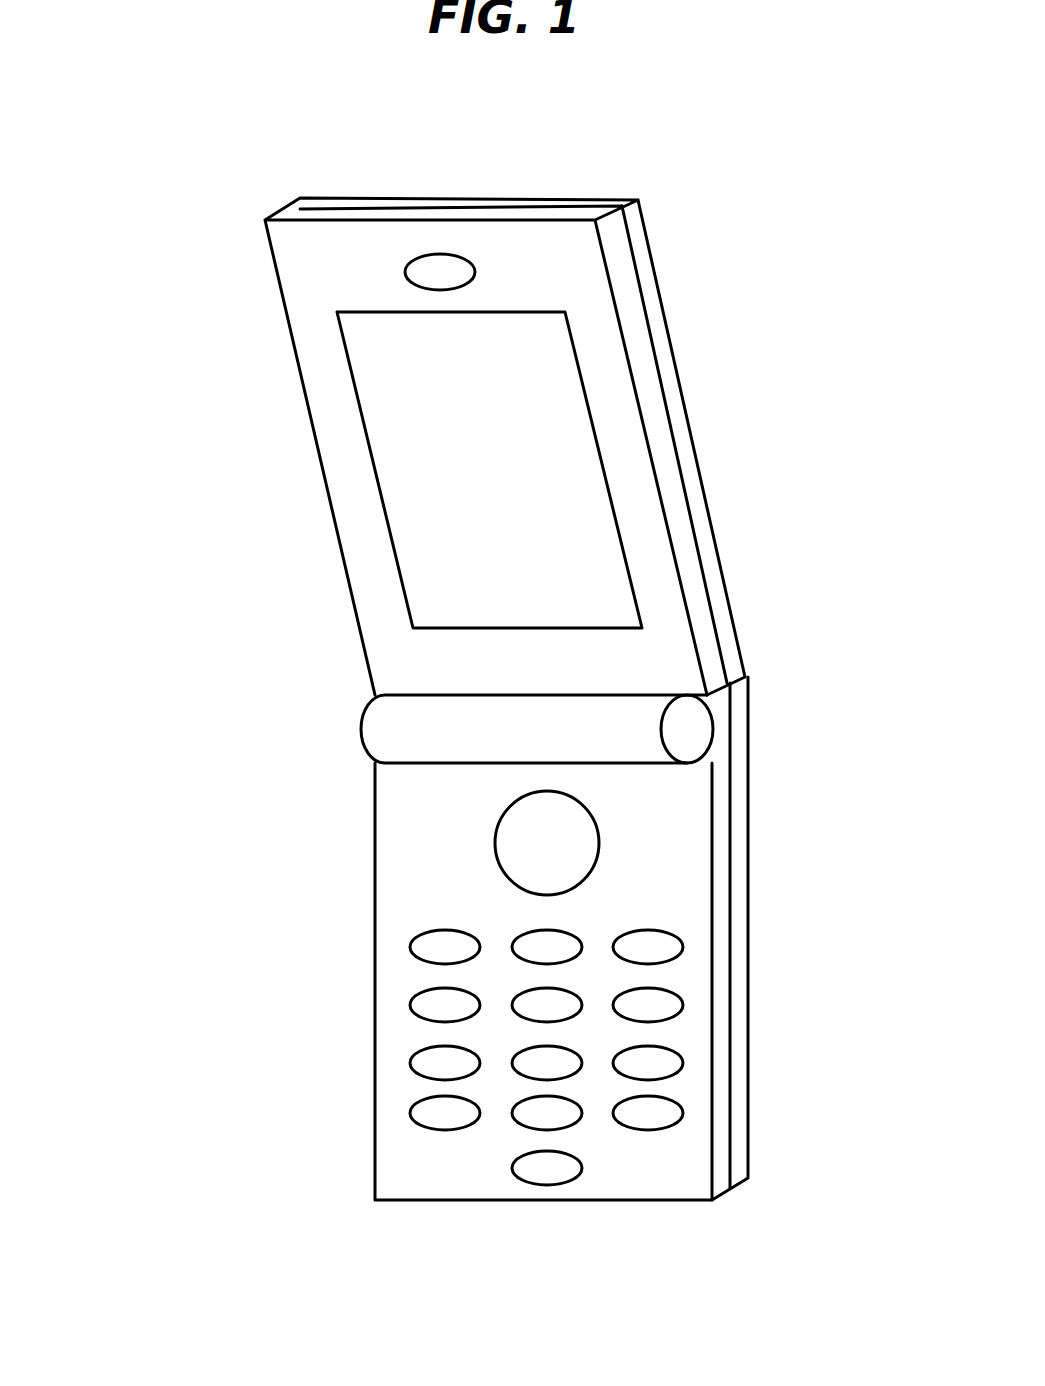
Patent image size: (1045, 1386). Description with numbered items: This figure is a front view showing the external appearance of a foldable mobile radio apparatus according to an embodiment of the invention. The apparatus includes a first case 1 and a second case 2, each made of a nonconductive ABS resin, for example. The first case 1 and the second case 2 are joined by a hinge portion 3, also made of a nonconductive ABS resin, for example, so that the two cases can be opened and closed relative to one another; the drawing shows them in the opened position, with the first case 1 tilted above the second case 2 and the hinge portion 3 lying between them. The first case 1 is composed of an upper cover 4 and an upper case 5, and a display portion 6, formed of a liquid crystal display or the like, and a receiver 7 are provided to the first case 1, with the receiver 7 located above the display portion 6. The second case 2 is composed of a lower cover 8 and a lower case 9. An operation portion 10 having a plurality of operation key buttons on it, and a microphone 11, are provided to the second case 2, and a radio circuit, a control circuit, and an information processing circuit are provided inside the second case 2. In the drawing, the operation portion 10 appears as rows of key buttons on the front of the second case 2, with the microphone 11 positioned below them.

The first case 1 is at (470, 420).
The second case 2 is at (536, 988).
The hinge portion 3 is at (683, 737).
The upper cover 4 is at (570, 283).
The upper case 5 is at (660, 340).
The display portion 6 is at (542, 527).
The receiver 7 is at (354, 339).
The lower cover 8 is at (683, 820).
The lower case 9 is at (747, 1048).
The operation portion 10 is at (445, 1065).
The microphone 11 is at (548, 1175).